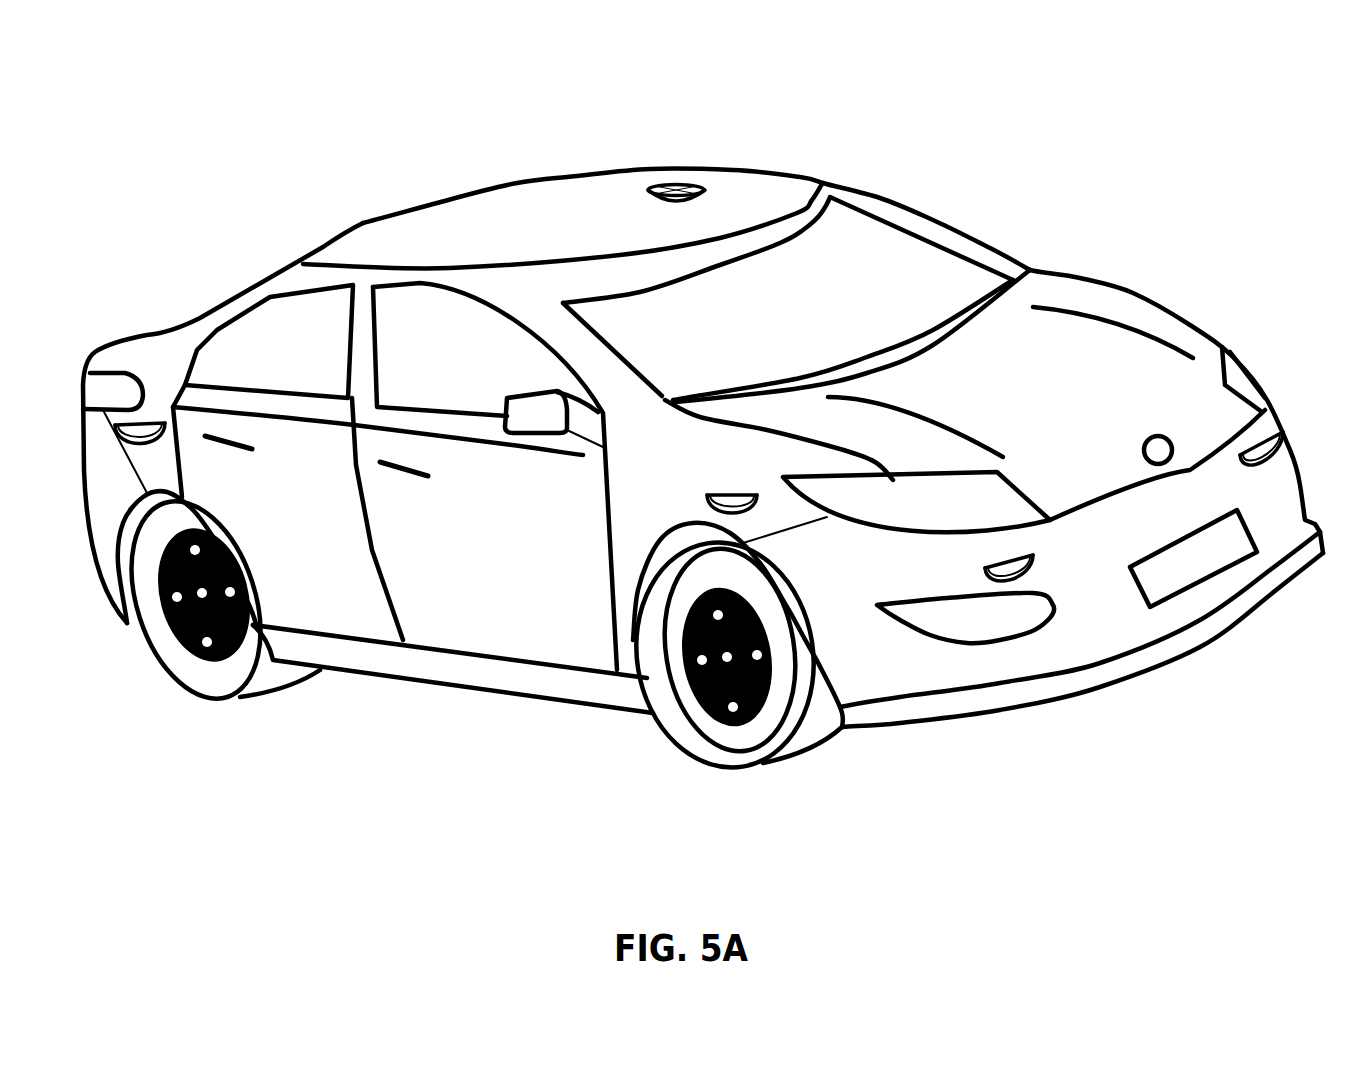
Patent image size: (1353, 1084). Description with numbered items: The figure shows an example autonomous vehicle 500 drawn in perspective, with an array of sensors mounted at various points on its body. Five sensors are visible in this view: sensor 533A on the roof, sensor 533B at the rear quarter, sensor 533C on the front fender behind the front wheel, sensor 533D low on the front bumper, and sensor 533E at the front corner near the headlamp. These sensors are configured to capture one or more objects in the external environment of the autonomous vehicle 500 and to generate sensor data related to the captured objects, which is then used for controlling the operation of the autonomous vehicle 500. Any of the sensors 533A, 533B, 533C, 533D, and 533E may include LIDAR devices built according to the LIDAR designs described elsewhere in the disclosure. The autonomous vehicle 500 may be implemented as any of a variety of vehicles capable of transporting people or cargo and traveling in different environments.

The autonomous vehicle 500 is at (1083, 115).
The sensor 533A is at (680, 187).
The sensor 533B is at (162, 425).
The sensor 533C is at (731, 495).
The sensor 533D is at (990, 565).
The sensor 533E is at (1238, 457).